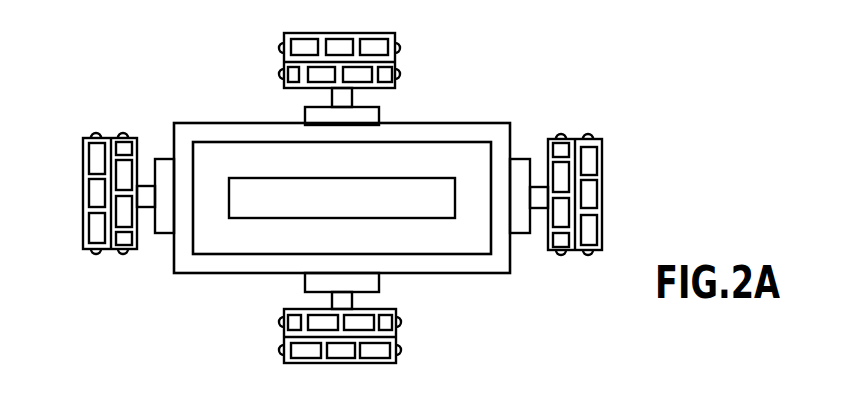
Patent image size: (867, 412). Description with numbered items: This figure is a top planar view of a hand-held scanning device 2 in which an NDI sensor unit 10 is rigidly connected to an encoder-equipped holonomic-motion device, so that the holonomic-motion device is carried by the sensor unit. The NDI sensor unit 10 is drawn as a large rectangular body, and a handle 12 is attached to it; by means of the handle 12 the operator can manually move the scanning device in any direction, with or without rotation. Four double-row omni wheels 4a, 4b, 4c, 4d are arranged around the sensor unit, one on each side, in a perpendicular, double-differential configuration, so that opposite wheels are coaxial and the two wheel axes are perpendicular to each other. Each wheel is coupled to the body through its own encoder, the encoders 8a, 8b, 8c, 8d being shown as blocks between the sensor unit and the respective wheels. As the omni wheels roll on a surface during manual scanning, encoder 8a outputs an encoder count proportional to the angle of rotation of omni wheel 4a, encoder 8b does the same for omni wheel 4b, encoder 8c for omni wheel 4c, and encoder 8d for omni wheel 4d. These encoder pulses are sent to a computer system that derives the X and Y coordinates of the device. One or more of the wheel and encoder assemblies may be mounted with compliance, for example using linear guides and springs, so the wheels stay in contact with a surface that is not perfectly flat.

The housing / base body 2 is at (202, 274).
The NDI sensor unit 10 is at (450, 143).
The handle 12 is at (264, 178).
The omni wheel 4a is at (602, 158).
The omni wheel 4b is at (378, 33).
The omni wheel 4c is at (83, 183).
The omni wheel 4d is at (378, 363).
The encoder 8a is at (525, 159).
The encoder 8b is at (380, 122).
The encoder 8c is at (162, 159).
The encoder 8d is at (303, 285).